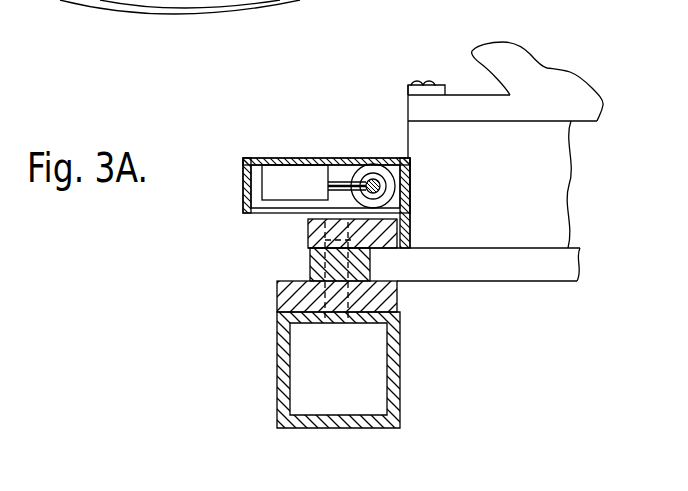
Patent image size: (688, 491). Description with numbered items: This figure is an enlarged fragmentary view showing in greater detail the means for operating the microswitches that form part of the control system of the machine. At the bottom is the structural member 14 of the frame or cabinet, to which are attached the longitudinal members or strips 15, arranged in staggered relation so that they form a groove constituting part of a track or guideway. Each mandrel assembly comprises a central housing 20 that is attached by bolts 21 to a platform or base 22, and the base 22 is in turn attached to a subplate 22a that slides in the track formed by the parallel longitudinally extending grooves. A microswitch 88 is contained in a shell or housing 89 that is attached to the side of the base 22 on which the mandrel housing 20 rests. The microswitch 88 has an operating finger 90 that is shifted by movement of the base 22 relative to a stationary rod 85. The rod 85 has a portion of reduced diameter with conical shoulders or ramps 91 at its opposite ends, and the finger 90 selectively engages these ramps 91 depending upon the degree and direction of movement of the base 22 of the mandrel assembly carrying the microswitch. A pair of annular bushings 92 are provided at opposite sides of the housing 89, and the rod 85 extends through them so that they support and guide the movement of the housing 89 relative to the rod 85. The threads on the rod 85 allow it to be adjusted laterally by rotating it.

The structural member 14 is at (290, 383).
The longitudinal members or strips 15 is at (277, 297).
The central housing 20 is at (518, 64).
The bolts 21 is at (423, 85).
The platform or base 22 is at (420, 135).
The subplate 22a is at (550, 267).
The rod 85 is at (373, 184).
The microswitch 88 is at (275, 180).
The shell or housing 89 is at (302, 158).
The operating finger 90 is at (345, 182).
The conical shoulders or ramps 91 is at (383, 193).
The annular bushings 92 is at (392, 177).